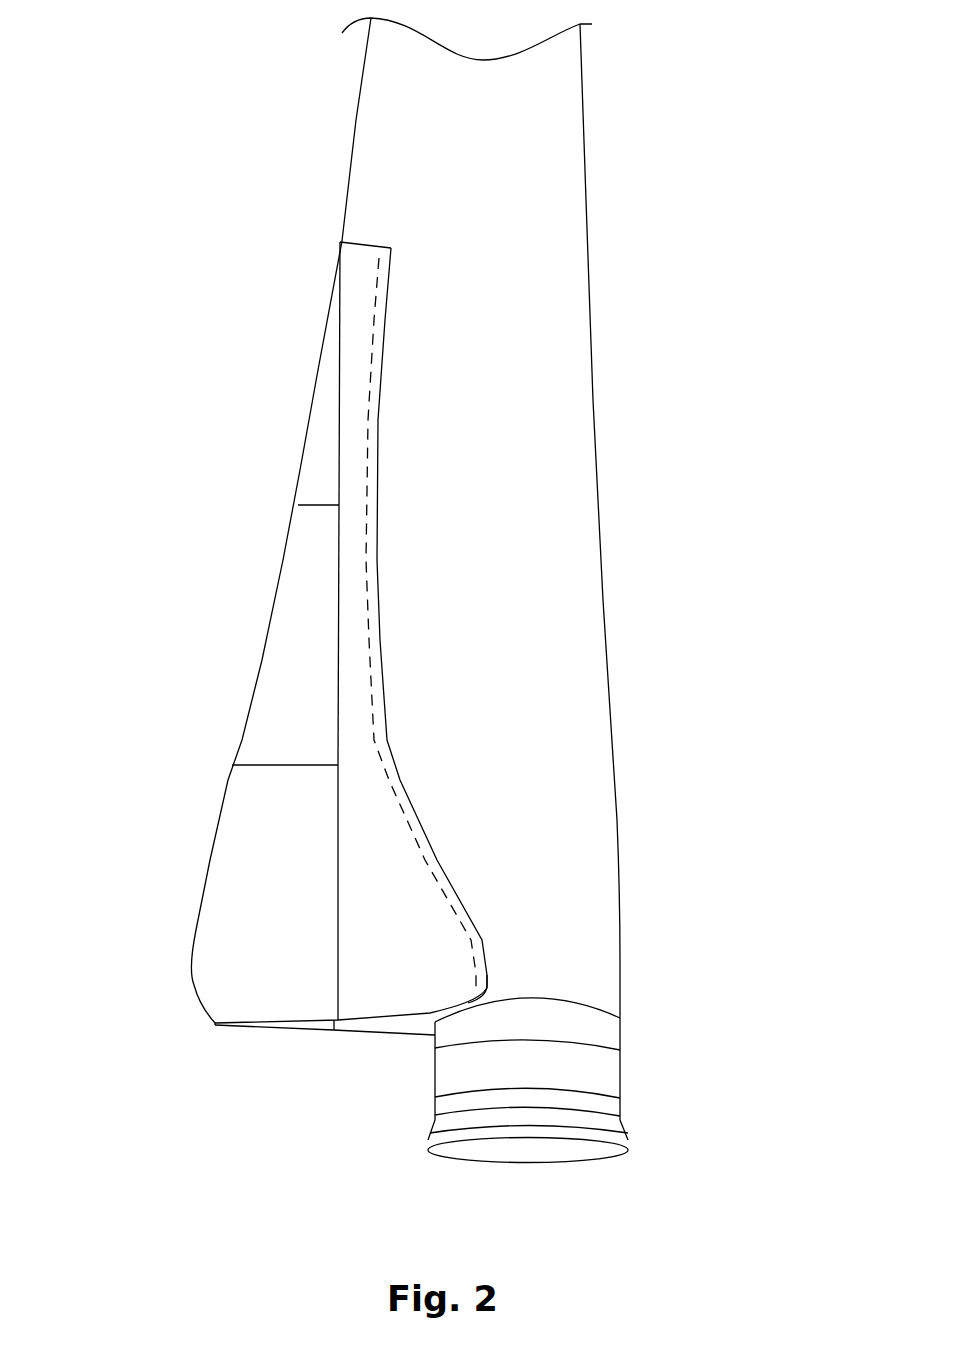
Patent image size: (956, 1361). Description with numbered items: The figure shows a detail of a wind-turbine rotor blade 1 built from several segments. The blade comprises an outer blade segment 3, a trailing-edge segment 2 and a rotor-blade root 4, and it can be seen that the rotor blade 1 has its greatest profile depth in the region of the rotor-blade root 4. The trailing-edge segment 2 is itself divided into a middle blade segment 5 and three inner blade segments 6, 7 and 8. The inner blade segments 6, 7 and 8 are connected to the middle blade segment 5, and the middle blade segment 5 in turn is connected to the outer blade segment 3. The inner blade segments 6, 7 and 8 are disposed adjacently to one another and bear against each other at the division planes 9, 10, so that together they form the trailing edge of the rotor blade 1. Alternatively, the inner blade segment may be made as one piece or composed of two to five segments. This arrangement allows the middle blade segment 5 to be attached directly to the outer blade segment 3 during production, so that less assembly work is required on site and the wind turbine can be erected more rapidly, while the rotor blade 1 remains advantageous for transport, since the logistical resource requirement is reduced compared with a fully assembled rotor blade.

The wind-turbine rotor blade 1 is at (647, 444).
The trailing-edge segment 2 is at (254, 1105).
The outer blade segment 3 is at (585, 778).
The rotor-blade root 4 is at (648, 1124).
The middle blade segment 5 is at (401, 987).
The inner blade segment 6 is at (226, 940).
The inner blade segment 7 is at (292, 637).
The inner blade segment 8 is at (328, 436).
The division plane 9 is at (275, 775).
The division plane 10 is at (313, 518).